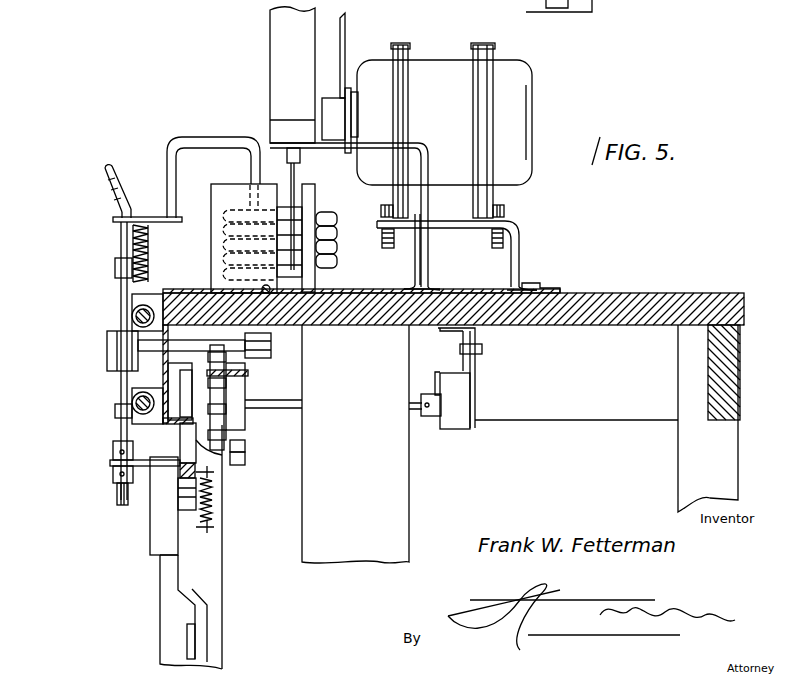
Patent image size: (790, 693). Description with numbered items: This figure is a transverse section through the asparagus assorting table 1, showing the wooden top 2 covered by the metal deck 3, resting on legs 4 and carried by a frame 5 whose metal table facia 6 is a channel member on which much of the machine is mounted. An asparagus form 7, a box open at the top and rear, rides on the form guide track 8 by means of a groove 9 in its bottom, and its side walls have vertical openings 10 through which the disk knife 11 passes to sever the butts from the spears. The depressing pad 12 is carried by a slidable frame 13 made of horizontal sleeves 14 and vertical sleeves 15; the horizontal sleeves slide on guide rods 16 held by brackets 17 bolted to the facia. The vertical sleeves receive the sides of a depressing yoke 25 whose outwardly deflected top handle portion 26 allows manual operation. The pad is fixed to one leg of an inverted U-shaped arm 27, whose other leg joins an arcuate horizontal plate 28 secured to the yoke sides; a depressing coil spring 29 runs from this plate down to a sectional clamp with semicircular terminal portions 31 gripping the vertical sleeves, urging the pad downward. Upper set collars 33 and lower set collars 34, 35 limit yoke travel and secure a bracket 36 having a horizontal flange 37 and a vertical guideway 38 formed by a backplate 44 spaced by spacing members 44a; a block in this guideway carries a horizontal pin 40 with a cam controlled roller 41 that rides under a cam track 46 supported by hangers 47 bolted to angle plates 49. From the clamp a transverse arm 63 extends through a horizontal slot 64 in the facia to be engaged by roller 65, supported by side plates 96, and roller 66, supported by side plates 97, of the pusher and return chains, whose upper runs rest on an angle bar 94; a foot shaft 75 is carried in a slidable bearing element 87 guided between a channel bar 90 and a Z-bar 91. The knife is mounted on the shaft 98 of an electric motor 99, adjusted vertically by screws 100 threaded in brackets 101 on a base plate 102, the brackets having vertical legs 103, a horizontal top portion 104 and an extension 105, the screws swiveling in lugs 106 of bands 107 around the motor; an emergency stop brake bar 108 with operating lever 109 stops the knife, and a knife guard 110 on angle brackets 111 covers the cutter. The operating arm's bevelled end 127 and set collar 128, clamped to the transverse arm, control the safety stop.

The asparagus assorting table 1 is at (634, 433).
The wooden top 2 is at (703, 308).
The metal deck 3 is at (559, 291).
The legs 4 is at (726, 461).
The frame 5 is at (564, 409).
The metal table facia 6 is at (163, 374).
The asparagus form 7 is at (210, 251).
The form guide track 8 is at (268, 295).
The groove 9 is at (262, 285).
The vertical openings 10 is at (302, 257).
The disk knife 11 is at (296, 173).
The depressing pad 12 is at (250, 208).
The slidable frame 13 is at (108, 328).
The horizontal sleeves 14 is at (142, 308).
The vertical sleeves 15 is at (118, 381).
The guide rods 16 is at (133, 316).
The brackets 17 is at (120, 441).
The depressing yoke 25 is at (115, 236).
The top handle portion 26 is at (108, 170).
The inverted U-shaped arm 27 is at (195, 138).
The horizontal plate 28 is at (113, 218).
The depressing coil spring 29 is at (117, 248).
The semicircular terminal portions 31 is at (107, 346).
The upper set collars 33 is at (115, 270).
The lower set collar 34 is at (112, 464).
The lower set collar 35 is at (116, 476).
The bracket 36 is at (168, 0).
The horizontal flange 37 is at (140, 463).
The vertical guideway 38 is at (177, 550).
The horizontal pin 40 is at (208, 488).
The cam controlled roller 41 is at (193, 507).
The backplate 44 is at (173, 535).
The spacing members 44a is at (167, 532).
The cam track 46 is at (168, 490).
The hangers 47 is at (203, 455).
The angle plates 49 is at (190, 400).
The transverse arm 63 is at (240, 353).
The horizontal slot 64 is at (180, 322).
The roller 65 is at (218, 340).
The roller 66 is at (245, 460).
The foot shaft 75 is at (413, 416).
The slidable bearing element 87 is at (465, 389).
The channel bar 90 is at (475, 364).
The Z-bar 91 is at (440, 371).
The angle bar 94 is at (243, 373).
The side plates 96 is at (216, 350).
The side plates 97 is at (243, 447).
The motor shaft 98 is at (316, 107).
The electric motor 99 is at (532, 103).
The vertical screws 100 is at (382, 233).
The brackets 101 is at (428, 252).
The base plate 102 is at (531, 284).
The vertical legs 103 is at (418, 265).
The horizontal top portion 104 is at (440, 227).
The extension 105 is at (380, 223).
The lugs 106 is at (380, 210).
The bands 107 is at (400, 107).
The emergency stop brake bar 108 is at (327, 112).
The operating lever 109 is at (343, 50).
The knife guard 110 is at (278, 41).
The angle brackets 111 is at (281, 125).
The bevelled end 127 is at (273, 346).
The set collar 128 is at (271, 356).